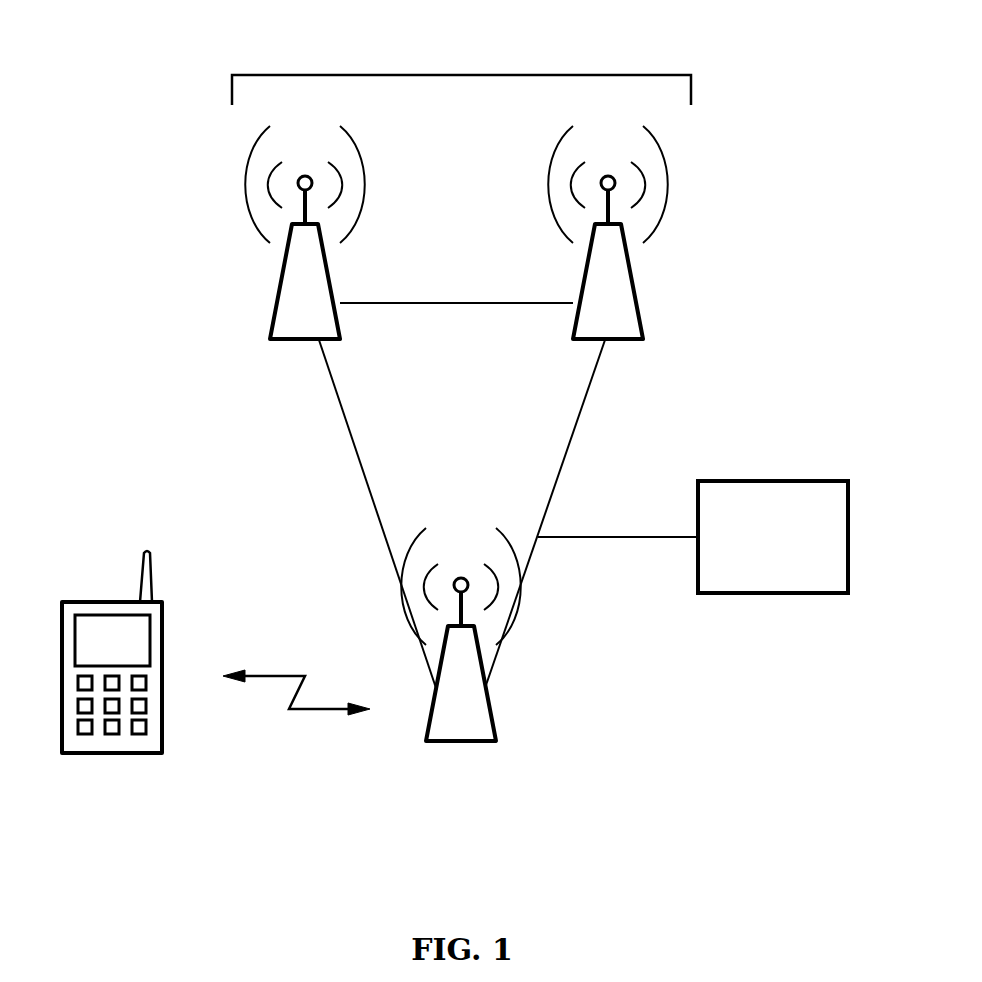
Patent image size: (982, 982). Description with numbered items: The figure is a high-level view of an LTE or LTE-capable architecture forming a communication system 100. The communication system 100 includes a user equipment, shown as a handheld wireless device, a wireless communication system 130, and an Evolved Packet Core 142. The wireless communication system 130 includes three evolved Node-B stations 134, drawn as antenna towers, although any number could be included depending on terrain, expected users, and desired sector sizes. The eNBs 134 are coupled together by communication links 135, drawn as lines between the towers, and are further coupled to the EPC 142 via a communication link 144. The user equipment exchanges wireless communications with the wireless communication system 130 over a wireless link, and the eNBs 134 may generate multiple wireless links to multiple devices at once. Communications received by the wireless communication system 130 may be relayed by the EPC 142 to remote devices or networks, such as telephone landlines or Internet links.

The communication system 100 is at (130, 753).
The wireless communication system 130 is at (461, 75).
The evolved Node-B station (eNB) 134 is at (276, 297).
The communication link 135 is at (443, 303).
The Evolved Packet Core (EPC) 142 is at (773, 537).
The communication link 144 is at (610, 537).